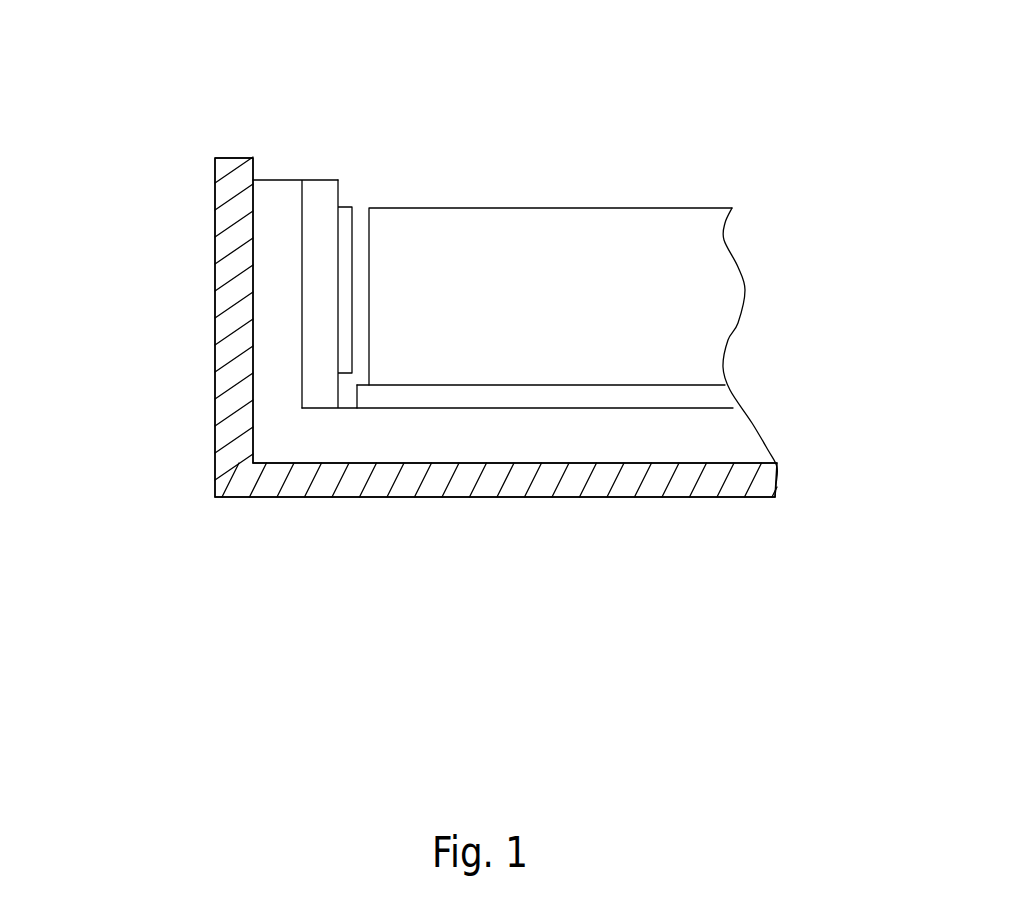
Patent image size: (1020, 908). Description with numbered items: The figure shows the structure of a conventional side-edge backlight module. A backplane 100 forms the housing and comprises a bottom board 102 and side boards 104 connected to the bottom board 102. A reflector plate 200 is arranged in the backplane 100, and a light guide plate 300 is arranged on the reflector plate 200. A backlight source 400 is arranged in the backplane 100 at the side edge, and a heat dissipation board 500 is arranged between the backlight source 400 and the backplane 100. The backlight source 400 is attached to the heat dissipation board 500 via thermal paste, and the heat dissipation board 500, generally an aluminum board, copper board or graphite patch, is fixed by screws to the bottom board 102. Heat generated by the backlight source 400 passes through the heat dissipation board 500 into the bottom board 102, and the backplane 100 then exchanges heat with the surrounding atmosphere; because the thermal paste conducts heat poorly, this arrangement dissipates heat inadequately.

The backplane 100 is at (463, 403).
The bottom board 102 is at (407, 480).
The side boards 104 is at (228, 363).
The reflector plate 200 is at (712, 402).
The light guide plate 300 is at (683, 297).
The backlight source 400 is at (320, 247).
The heat dissipation board 500 is at (275, 319).